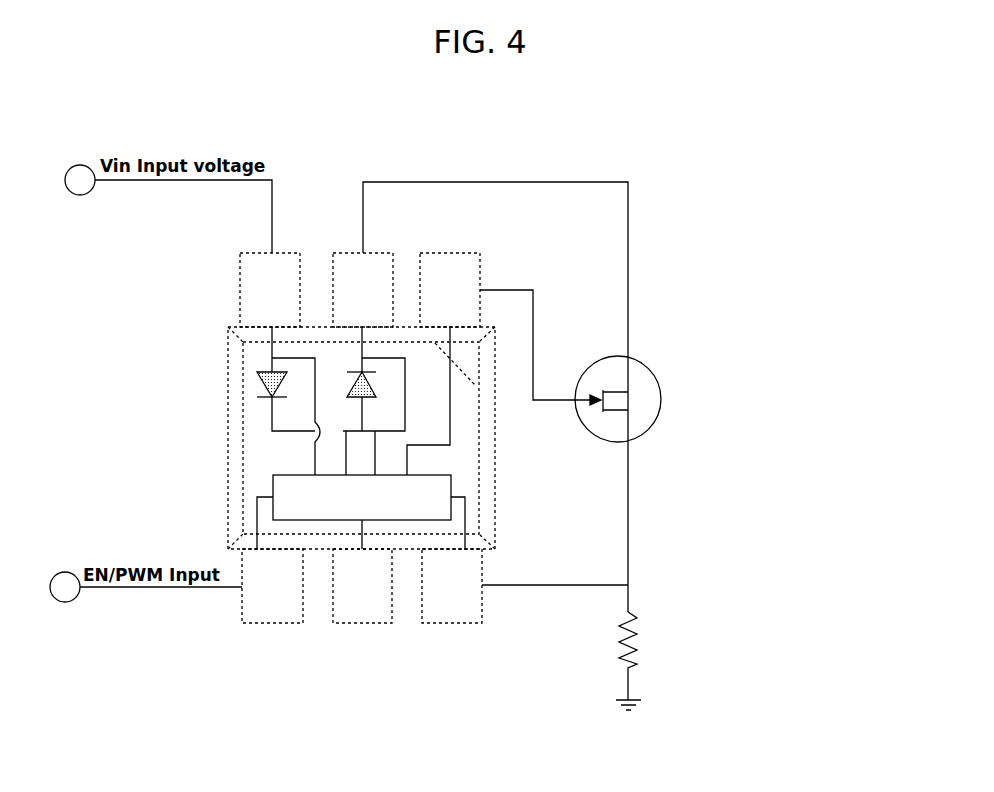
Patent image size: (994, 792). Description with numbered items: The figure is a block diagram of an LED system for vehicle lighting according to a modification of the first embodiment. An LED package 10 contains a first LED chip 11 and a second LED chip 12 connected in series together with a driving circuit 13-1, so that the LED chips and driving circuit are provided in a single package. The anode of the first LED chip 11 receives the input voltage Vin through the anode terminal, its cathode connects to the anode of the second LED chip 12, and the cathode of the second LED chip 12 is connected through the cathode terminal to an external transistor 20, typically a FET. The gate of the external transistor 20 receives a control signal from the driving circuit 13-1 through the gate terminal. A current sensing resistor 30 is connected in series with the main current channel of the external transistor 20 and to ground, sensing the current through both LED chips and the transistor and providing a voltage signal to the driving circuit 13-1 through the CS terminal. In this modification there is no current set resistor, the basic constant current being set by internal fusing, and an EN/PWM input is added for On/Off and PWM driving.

The LED package 10 is at (396, 438).
The first LED chip 11 is at (262, 383).
The second LED chip 12 is at (372, 386).
The driving circuit 13-1 is at (451, 485).
The external transistor 20 is at (607, 442).
The current sensing resistor 30 is at (612, 628).